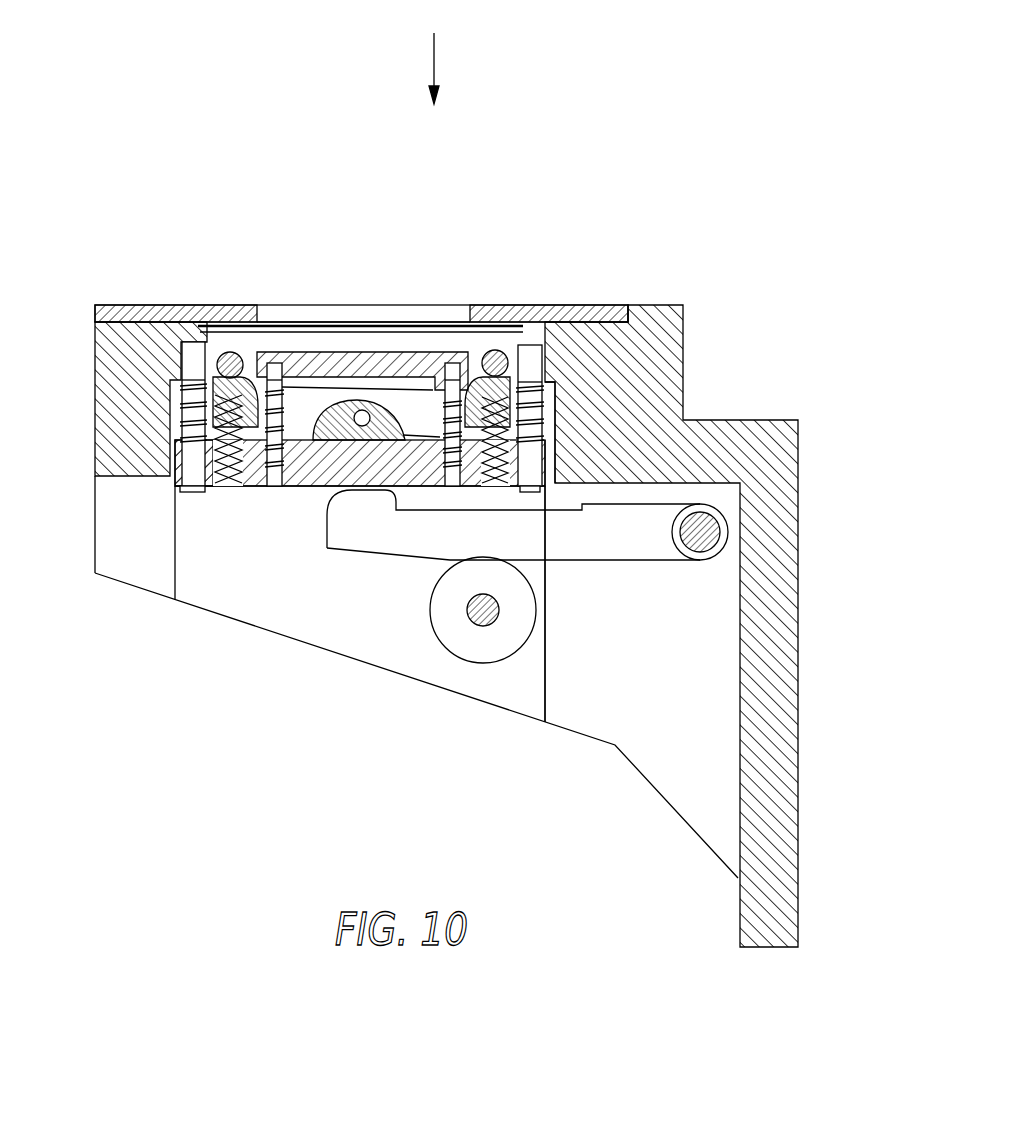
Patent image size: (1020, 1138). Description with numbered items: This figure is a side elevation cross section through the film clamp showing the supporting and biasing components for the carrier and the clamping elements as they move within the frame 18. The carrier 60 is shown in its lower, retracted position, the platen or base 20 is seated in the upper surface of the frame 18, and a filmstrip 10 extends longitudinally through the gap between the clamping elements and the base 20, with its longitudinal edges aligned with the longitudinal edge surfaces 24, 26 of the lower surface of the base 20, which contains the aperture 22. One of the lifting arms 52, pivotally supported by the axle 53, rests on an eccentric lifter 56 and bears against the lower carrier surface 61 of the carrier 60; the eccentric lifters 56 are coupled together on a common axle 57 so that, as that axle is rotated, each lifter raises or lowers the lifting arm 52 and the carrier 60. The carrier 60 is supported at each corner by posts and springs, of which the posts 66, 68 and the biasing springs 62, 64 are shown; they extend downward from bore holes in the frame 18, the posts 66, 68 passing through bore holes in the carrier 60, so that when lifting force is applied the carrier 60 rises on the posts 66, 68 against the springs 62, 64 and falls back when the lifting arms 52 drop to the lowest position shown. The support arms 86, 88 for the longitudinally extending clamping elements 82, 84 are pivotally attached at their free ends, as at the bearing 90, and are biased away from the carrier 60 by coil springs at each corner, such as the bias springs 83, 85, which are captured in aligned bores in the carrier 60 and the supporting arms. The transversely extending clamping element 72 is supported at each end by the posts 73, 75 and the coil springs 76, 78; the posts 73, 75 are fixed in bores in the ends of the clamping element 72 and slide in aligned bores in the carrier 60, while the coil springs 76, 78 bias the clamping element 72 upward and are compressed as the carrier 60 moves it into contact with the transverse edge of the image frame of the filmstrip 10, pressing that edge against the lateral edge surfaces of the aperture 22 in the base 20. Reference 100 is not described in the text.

The direction of media travel 100 is at (425, 55).
The filmstrip 10 is at (337, 326).
The frame 18 is at (660, 354).
The platen or base 20 is at (612, 303).
The aperture 22 is at (413, 326).
The longitudinal edge surface 24 is at (487, 350).
The longitudinal edge surface 26 is at (240, 352).
The lifting arm 52 is at (357, 525).
The axle 53 is at (705, 530).
The eccentric lifter 56 is at (485, 656).
The axle 57 is at (497, 614).
The carrier 60 is at (327, 490).
The lower carrier surface 61 is at (298, 488).
The biasing spring 62 is at (200, 422).
The biasing spring 64 is at (545, 420).
The post 66 is at (178, 305).
The post 68 is at (533, 355).
The transversely extending clamping element 72 is at (317, 352).
The post 73 is at (448, 355).
The post 75 is at (274, 363).
The coil spring 76 is at (440, 478).
The coil spring 78 is at (277, 487).
The longitudinally extending clamping element 82 is at (508, 396).
The bias spring 83 is at (485, 488).
The longitudinally extending clamping element 84 is at (196, 342).
The bias spring 85 is at (222, 488).
The support arm 86 is at (455, 484).
The support arm 88 is at (205, 395).
The bearing 90 is at (362, 410).